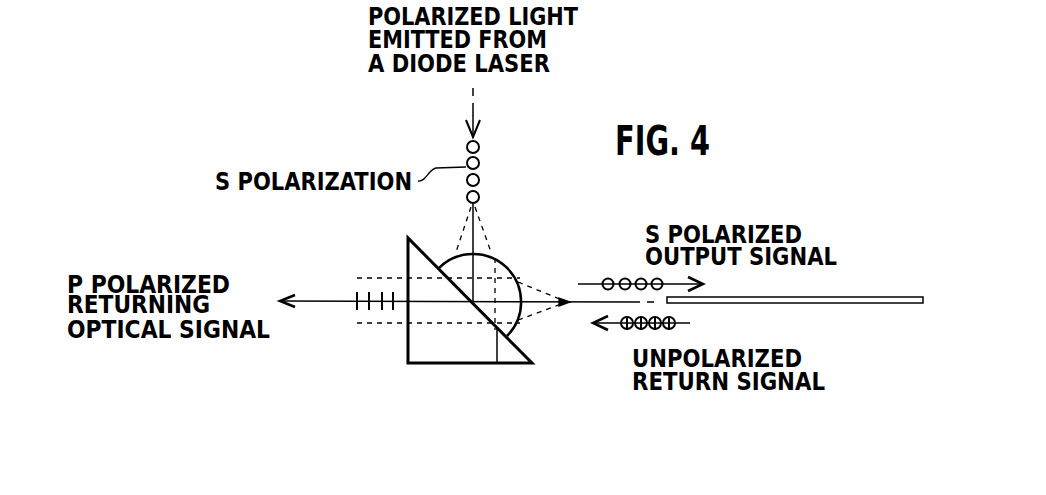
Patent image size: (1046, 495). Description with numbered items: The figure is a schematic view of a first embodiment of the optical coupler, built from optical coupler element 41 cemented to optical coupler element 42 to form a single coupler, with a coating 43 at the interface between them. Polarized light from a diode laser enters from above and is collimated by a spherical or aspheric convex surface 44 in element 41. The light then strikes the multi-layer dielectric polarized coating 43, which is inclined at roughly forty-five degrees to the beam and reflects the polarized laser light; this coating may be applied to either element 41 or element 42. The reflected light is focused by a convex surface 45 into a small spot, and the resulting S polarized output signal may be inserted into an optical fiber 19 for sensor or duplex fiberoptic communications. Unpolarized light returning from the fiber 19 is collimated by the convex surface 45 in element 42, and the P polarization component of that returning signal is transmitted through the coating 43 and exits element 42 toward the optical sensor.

The optical fiber 19 is at (860, 305).
The optical coupler element 41 is at (520, 261).
The optical coupler element 42 is at (468, 365).
The coating 43 is at (498, 365).
The convex surface 44 is at (463, 248).
The convex surface 45 is at (523, 311).